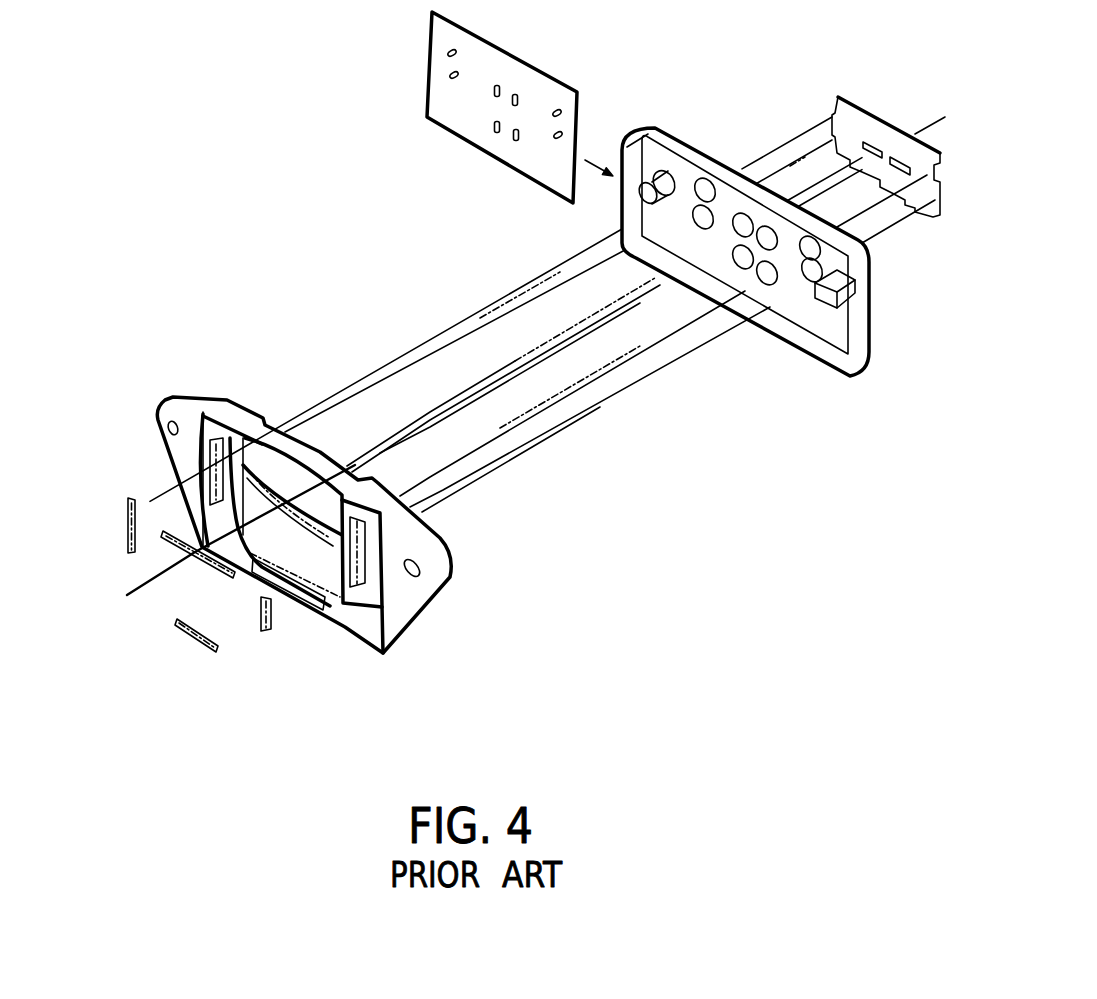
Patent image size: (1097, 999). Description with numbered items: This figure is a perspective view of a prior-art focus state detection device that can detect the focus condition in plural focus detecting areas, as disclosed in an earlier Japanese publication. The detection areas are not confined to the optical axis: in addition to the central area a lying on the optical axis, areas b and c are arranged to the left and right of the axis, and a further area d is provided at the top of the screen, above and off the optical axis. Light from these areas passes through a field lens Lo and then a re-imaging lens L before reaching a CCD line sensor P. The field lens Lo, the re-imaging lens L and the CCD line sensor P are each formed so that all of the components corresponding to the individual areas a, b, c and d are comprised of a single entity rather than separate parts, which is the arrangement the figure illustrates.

The central area a is at (217, 573).
The area b is at (122, 507).
The area c is at (272, 627).
The area d is at (212, 650).
The re-imaging lens L is at (832, 356).
The field lens Lo is at (400, 613).
The CCD line sensor P is at (843, 96).